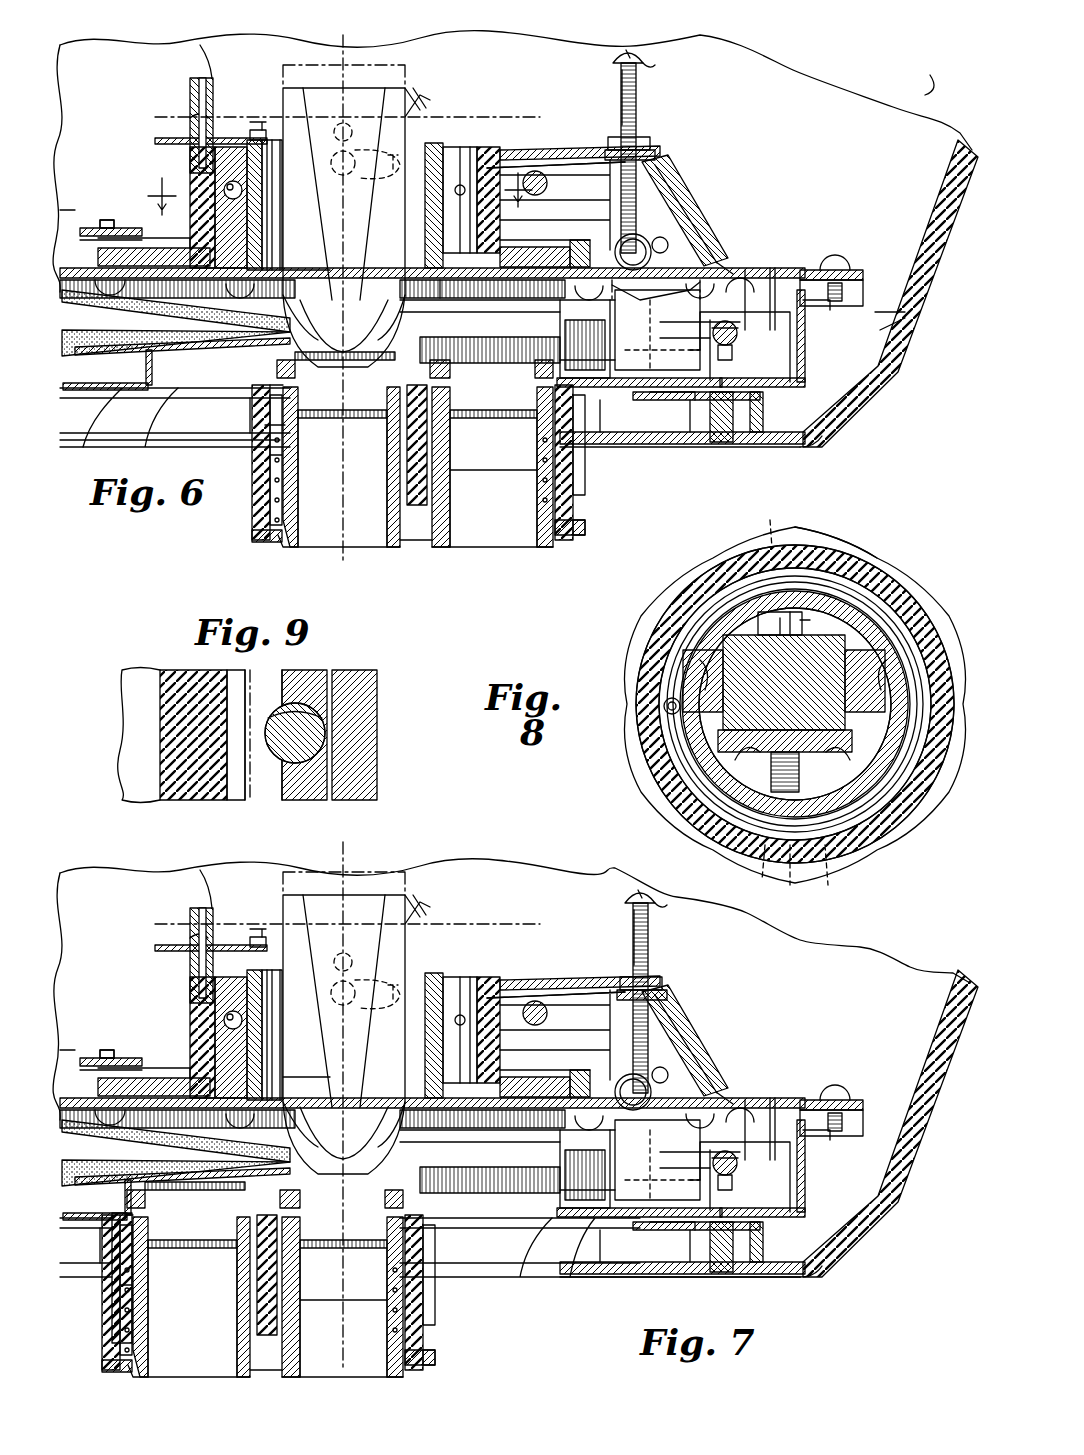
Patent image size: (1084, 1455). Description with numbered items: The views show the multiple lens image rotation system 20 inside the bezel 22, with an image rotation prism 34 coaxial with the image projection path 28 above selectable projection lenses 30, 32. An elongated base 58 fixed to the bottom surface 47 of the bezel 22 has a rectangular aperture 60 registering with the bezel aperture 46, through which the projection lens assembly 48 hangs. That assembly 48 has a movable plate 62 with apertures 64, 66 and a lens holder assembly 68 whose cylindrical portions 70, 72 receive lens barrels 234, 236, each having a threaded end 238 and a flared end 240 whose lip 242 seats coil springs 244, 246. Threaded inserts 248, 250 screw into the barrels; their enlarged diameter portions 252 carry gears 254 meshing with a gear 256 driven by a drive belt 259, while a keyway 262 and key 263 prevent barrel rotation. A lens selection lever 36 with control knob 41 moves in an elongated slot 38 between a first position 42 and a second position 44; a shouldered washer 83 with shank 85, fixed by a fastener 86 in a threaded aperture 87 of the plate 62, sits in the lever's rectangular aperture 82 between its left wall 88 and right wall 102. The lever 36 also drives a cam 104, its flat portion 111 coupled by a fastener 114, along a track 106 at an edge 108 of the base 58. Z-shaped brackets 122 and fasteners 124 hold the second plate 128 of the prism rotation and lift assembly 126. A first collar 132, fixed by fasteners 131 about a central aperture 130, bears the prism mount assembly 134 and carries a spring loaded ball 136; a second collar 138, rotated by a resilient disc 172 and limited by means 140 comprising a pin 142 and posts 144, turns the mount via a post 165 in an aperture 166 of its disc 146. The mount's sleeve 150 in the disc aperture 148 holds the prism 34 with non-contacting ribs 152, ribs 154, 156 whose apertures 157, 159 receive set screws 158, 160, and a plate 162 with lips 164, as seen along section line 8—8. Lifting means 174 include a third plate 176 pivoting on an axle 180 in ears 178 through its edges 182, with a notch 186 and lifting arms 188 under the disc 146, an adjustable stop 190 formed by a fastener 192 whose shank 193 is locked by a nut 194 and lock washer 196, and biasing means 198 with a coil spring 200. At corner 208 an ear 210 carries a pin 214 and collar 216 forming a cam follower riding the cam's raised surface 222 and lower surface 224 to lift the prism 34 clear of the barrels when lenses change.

In FIG. 6, the section line 8— 8 is at (340, 198).
In FIG. 6, the multiple lens image rotation system 20 is at (915, 90).
In FIG. 7, the multiple lens image rotation system 20 is at (885, 1300).
In FIG. 6, the bezel 22 is at (932, 322).
In FIG. 7, the bezel 22 is at (918, 1174).
In FIG. 6, the image projection path 28 is at (345, 50).
In FIG. 7, the image projection path 28 is at (345, 870).
In FIG. 6, the projection lens 30 is at (352, 420).
In FIG. 7, the projection lens 30 is at (205, 1250).
In FIG. 6, the projection lens 32 is at (500, 420).
In FIG. 7, the projection lens 32 is at (358, 1250).
In FIG. 6, the image rotation prism 34 is at (320, 90).
In FIG. 8, the image rotation prism 34 is at (850, 640).
In FIG. 7, the image rotation prism 34 is at (320, 900).
In FIG. 6, the lens selection lever 36 is at (810, 328).
In FIG. 7, the lens selection lever 36 is at (470, 1150).
In FIG. 6, the elongated slot 38 is at (515, 335).
In FIG. 7, the elongated slot 38 is at (685, 1165).
In FIG. 6, the control knob 41 is at (892, 322).
In FIG. 6, the first or left hand position 42 is at (856, 310).
In FIG. 7, the first or left hand position 42 is at (832, 1140).
In FIG. 6, the second or right hand position 44 is at (460, 284).
In FIG. 6, the aperture 46 is at (665, 420).
In FIG. 7, the aperture 46 is at (655, 1250).
In FIG. 6, the bottom surface 47 is at (705, 430).
In FIG. 7, the bottom surface 47 is at (705, 1260).
In FIG. 6, the projection lens assembly 48 is at (592, 500).
In FIG. 7, the projection lens assembly 48 is at (446, 1324).
In FIG. 6, the elongated base 58 is at (790, 405).
In FIG. 7, the elongated base 58 is at (790, 1228).
In FIG. 6, the rectangular aperture 60 is at (95, 447).
In FIG. 7, the rectangular aperture 60 is at (580, 1277).
In FIG. 6, the movable plate 62 is at (148, 447).
In FIG. 7, the movable plate 62 is at (532, 1277).
In FIG. 6, the aperture 64 is at (296, 385).
In FIG. 7, the aperture 64 is at (150, 1215).
In FIG. 6, the aperture 66 is at (540, 392).
In FIG. 7, the aperture 66 is at (385, 1220).
In FIG. 6, the lens holder assembly 68 is at (244, 497).
In FIG. 7, the lens holder assembly 68 is at (94, 1307).
In FIG. 6, the cylindrical portion 70 is at (258, 440).
In FIG. 7, the cylindrical portion 70 is at (100, 1280).
In FIG. 6, the cylindrical portion 72 is at (575, 425).
In FIG. 7, the cylindrical portion 72 is at (428, 1255).
In FIG. 6, the rectangular aperture 82 is at (760, 400).
In FIG. 7, the rectangular aperture 82 is at (700, 1165).
In FIG. 6, the shouldered washer 83 is at (700, 335).
In FIG. 7, the shouldered washer 83 is at (560, 1168).
In FIG. 6, the reduced diameter portion 85 is at (740, 400).
In FIG. 7, the reduced diameter portion 85 is at (560, 1185).
In FIG. 6, the fastener 86 is at (745, 270).
In FIG. 7, the fastener 86 is at (640, 1105).
In FIG. 6, the threaded aperture 87 is at (712, 400).
In FIG. 7, the threaded aperture 87 is at (700, 1230).
In FIG. 6, the left hand wall 88 is at (780, 360).
In FIG. 7, the left hand wall 88 is at (620, 1183).
In FIG. 6, the right hand wall 102 is at (700, 350).
In FIG. 7, the right hand wall 102 is at (555, 1183).
In FIG. 6, the cam 104 is at (790, 385).
In FIG. 7, the cam 104 is at (560, 1218).
In FIG. 6, the track 106 is at (548, 345).
In FIG. 7, the track 106 is at (725, 1170).
In FIG. 6, the edge 108 is at (670, 400).
In FIG. 7, the edge 108 is at (775, 1195).
In FIG. 6, the flat portion 111 is at (732, 285).
In FIG. 7, the flat portion 111 is at (740, 1115).
In FIG. 6, the fastener 114 is at (772, 268).
In FIG. 7, the fastener 114 is at (555, 1125).
In FIG. 6, the Z-shaped brackets 122 is at (820, 270).
In FIG. 7, the Z-shaped brackets 122 is at (822, 1100).
In FIG. 6, the fasteners 124 is at (842, 258).
In FIG. 7, the fasteners 124 is at (836, 1090).
In FIG. 6, the prism rotation and lift assembly 126 is at (592, 48).
In FIG. 7, the prism rotation and lift assembly 126 is at (508, 880).
In FIG. 6, the second plate 128 is at (873, 278).
In FIG. 7, the second plate 128 is at (862, 1105).
In FIG. 6, the aperture 130 is at (282, 265).
In FIG. 7, the aperture 130 is at (282, 1085).
In FIG. 6, the fasteners 131 is at (288, 282).
In FIG. 7, the fasteners 131 is at (288, 1095).
In FIG. 6, the first collar 132 is at (440, 140).
In FIG. 8, the first collar 132 is at (850, 595).
In FIG. 9, the first collar 132 is at (315, 805).
In FIG. 7, the first collar 132 is at (440, 975).
In FIG. 6, the prism mount assembly 134 is at (160, 138).
In FIG. 8, the prism mount assembly 134 is at (880, 612).
In FIG. 9, the prism mount assembly 134 is at (372, 665).
In FIG. 7, the prism mount assembly 134 is at (160, 946).
In FIG. 6, the spring loaded ball 136 is at (240, 190).
In FIG. 8, the spring loaded ball 136 is at (662, 707).
In FIG. 9, the spring loaded ball 136 is at (310, 730).
In FIG. 7, the spring loaded ball 136 is at (240, 1020).
In FIG. 6, the second collar 138 is at (110, 210).
In FIG. 8, the second collar 138 is at (658, 628).
In FIG. 9, the second collar 138 is at (185, 676).
In FIG. 7, the second collar 138 is at (118, 1055).
In FIG. 6, the means for limiting rotational displacement 140 is at (83, 216).
In FIG. 7, the means for limiting rotational displacement 140 is at (85, 1039).
In FIG. 6, the pin 142 is at (95, 232).
In FIG. 7, the pin 142 is at (95, 1062).
In FIG. 6, the stationary posts 144 is at (108, 224).
In FIG. 7, the stationary posts 144 is at (110, 1060).
In FIG. 6, the disc like member 146 is at (190, 120).
In FIG. 7, the disc like member 146 is at (190, 940).
In FIG. 6, the aperture 148 is at (258, 125).
In FIG. 7, the aperture 148 is at (258, 932).
In FIG. 6, the elongated sleeve 150 is at (215, 230).
In FIG. 8, the elongated sleeve 150 is at (890, 825).
In FIG. 9, the elongated sleeve 150 is at (360, 745).
In FIG. 7, the elongated sleeve 150 is at (215, 1045).
In FIG. 6, the ribs 152 is at (275, 230).
In FIG. 8, the ribs 152 is at (890, 650).
In FIG. 7, the ribs 152 is at (275, 1055).
In FIG. 8, the rib 154 is at (748, 550).
In FIG. 8, the rib 156 is at (758, 860).
In FIG. 7, the rib 156 is at (771, 876).
In FIG. 8, the threaded radial apertures 157 is at (773, 519).
In FIG. 8, the set screws 158 is at (825, 545).
In FIG. 8, the radial apertures 159 is at (784, 878).
In FIG. 8, the set screws 160 is at (843, 874).
In FIG. 8, the plate 162 is at (740, 760).
In FIG. 8, the lips 164 is at (700, 690).
In FIG. 6, the post 165 is at (208, 45).
In FIG. 7, the post 165 is at (206, 872).
In FIG. 6, the aperture 166 is at (200, 125).
In FIG. 7, the aperture 166 is at (200, 945).
In FIG. 6, the resilient disc 172 is at (265, 285).
In FIG. 7, the resilient disc 172 is at (265, 1115).
In FIG. 6, the lifting means 174 is at (782, 132).
In FIG. 7, the lifting means 174 is at (792, 982).
In FIG. 6, the third plate 176 is at (592, 142).
In FIG. 7, the third plate 176 is at (586, 978).
In FIG. 6, the ears 178 is at (535, 267).
In FIG. 7, the ears 178 is at (518, 1103).
In FIG. 6, the axle 180 is at (548, 184).
In FIG. 7, the axle 180 is at (548, 1020).
In FIG. 6, the edges 182 is at (550, 162).
In FIG. 7, the edges 182 is at (548, 990).
In FIG. 6, the notch 186 is at (525, 150).
In FIG. 7, the notch 186 is at (518, 975).
In FIG. 6, the lifting arms 188 is at (355, 190).
In FIG. 7, the lifting arms 188 is at (360, 1000).
In FIG. 6, the adjustable stop 190 is at (680, 95).
In FIG. 7, the adjustable stop 190 is at (706, 952).
In FIG. 6, the fastener 192 is at (640, 58).
In FIG. 7, the fastener 192 is at (645, 902).
In FIG. 6, the elongated shank 193 is at (620, 95).
In FIG. 7, the elongated shank 193 is at (632, 930).
In FIG. 6, the nut 194 is at (652, 138).
In FIG. 7, the nut 194 is at (655, 980).
In FIG. 6, the lock washer 196 is at (660, 153).
In FIG. 7, the lock washer 196 is at (668, 992).
In FIG. 6, the biasing means 198 is at (770, 212).
In FIG. 7, the biasing means 198 is at (768, 1047).
In FIG. 6, the coil spring 200 is at (670, 165).
In FIG. 7, the coil spring 200 is at (670, 1010).
In FIG. 6, the corner 208 is at (690, 198).
In FIG. 7, the corner 208 is at (690, 1030).
In FIG. 6, the ear 210 is at (652, 252).
In FIG. 7, the ear 210 is at (648, 1082).
In FIG. 6, the pin 214 is at (645, 270).
In FIG. 7, the pin 214 is at (633, 1110).
In FIG. 6, the collar 216 is at (332, 162).
In FIG. 7, the collar 216 is at (332, 968).
In FIG. 6, the top surface 222 is at (585, 339).
In FIG. 7, the top surface 222 is at (400, 1100).
In FIG. 6, the cam surface 224 is at (648, 295).
In FIG. 6, the lens barrel 234 is at (370, 550).
In FIG. 7, the lens barrel 234 is at (215, 1378).
In FIG. 6, the lens barrel 236 is at (493, 550).
In FIG. 7, the lens barrel 236 is at (372, 1378).
In FIG. 6, the threaded end 238 is at (340, 418).
In FIG. 7, the threaded end 238 is at (240, 1238).
In FIG. 6, the flared end 240 is at (410, 545).
In FIG. 7, the flared end 240 is at (258, 1375).
In FIG. 6, the lip 242 is at (270, 542).
In FIG. 7, the lip 242 is at (122, 1360).
In FIG. 6, the coil spring 244 is at (272, 525).
In FIG. 7, the coil spring 244 is at (122, 1348).
In FIG. 6, the coil spring 246 is at (586, 528).
In FIG. 7, the coil spring 246 is at (440, 1355).
In FIG. 6, the threaded insert 248 is at (345, 418).
In FIG. 7, the threaded insert 248 is at (238, 1248).
In FIG. 6, the threaded insert 250 is at (480, 420).
In FIG. 7, the threaded insert 250 is at (358, 1250).
In FIG. 6, the enlarged diameter portion 252 is at (420, 335).
In FIG. 7, the enlarged diameter portion 252 is at (275, 1183).
In FIG. 6, the gears 254 is at (562, 372).
In FIG. 7, the gears 254 is at (460, 1200).
In FIG. 6, the gear 256 is at (275, 348).
In FIG. 7, the gear 256 is at (400, 1172).
In FIG. 6, the drive belt 259 is at (145, 318).
In FIG. 7, the drive belt 259 is at (145, 1148).
In FIG. 6, the keyway 262 is at (335, 418).
In FIG. 7, the keyway 262 is at (185, 1248).
In FIG. 6, the key 263 is at (265, 437).
In FIG. 7, the key 263 is at (115, 1265).